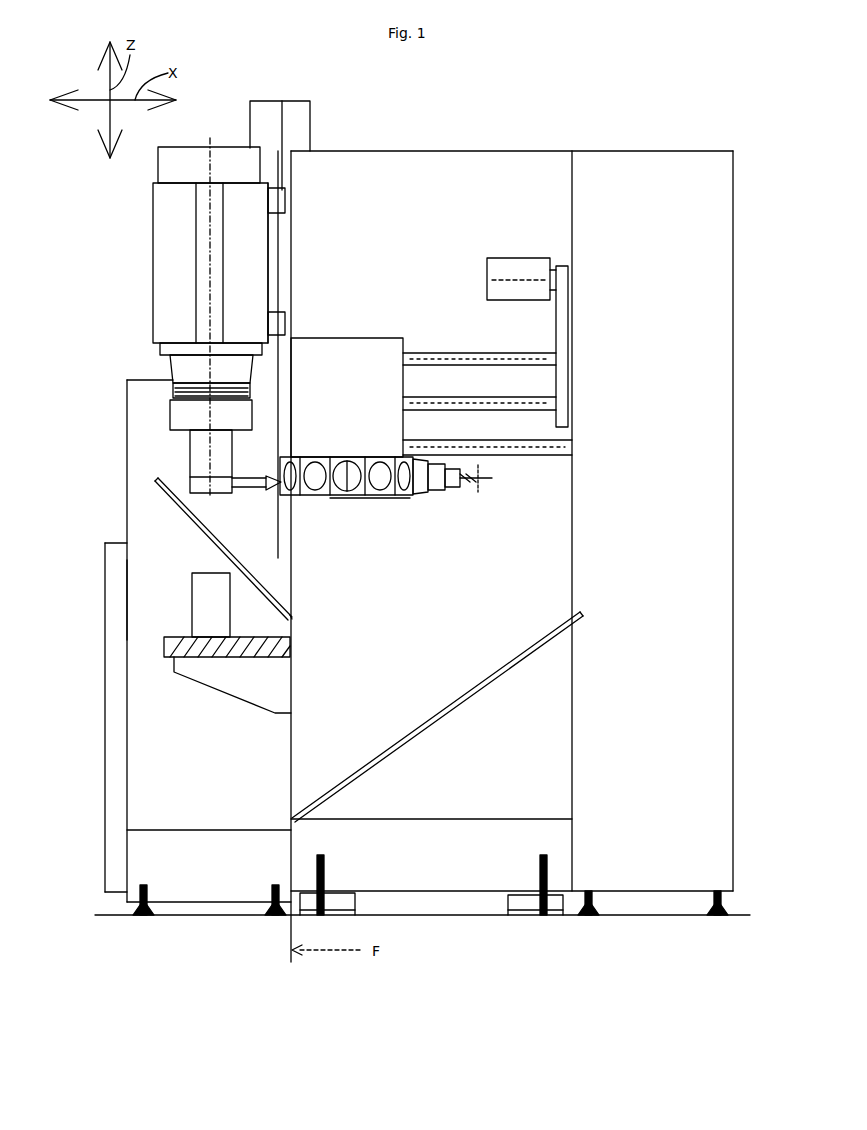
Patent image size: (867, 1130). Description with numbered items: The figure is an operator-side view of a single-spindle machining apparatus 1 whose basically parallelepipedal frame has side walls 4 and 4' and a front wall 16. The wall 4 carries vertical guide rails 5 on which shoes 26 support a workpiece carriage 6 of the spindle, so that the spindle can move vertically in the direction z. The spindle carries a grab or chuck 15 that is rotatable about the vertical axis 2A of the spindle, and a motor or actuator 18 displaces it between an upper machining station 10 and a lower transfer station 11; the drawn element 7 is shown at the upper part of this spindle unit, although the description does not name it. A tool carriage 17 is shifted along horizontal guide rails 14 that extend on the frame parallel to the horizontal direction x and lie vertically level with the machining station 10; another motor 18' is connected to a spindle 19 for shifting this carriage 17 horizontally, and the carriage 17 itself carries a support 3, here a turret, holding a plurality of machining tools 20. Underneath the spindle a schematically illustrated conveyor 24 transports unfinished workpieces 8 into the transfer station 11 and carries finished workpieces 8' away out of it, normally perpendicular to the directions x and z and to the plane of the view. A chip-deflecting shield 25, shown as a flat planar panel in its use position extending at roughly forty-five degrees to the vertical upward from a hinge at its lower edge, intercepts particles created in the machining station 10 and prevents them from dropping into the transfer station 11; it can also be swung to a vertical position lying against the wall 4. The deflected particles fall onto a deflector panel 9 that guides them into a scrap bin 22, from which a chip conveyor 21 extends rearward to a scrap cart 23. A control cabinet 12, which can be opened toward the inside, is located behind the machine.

The machining apparatus 1 is at (403, 128).
The vertical axis 2A is at (208, 165).
The support 3 is at (380, 487).
The side wall 4 is at (405, 556).
The side wall 4' is at (607, 768).
The vertical guide rails 5 is at (310, 262).
The workpiece carriage 6 is at (130, 310).
The spindle drive 7 is at (172, 242).
The unfinished workpieces 8 is at (152, 461).
The finished workpieces 8' is at (196, 596).
The deflector panel 9 is at (422, 718).
The machining station 10 is at (150, 478).
The transfer station 11 is at (158, 604).
The control cabinet 12 is at (713, 487).
The guide rails 14 is at (498, 352).
The grab or chuck 15 is at (185, 415).
The front wall 16 is at (485, 178).
The tool carriage 17 is at (380, 352).
The motor or actuator 18 is at (301, 128).
The motor 18' is at (527, 328).
The spindle 19 is at (480, 398).
The machining tools 20 is at (258, 507).
The conveyor 21 is at (170, 752).
The scrap bin 22 is at (150, 848).
The scrap cart 23 is at (118, 803).
The conveyor 24 is at (165, 643).
The chip-deflecting shield 25 is at (270, 584).
The shoes 26 is at (298, 204).